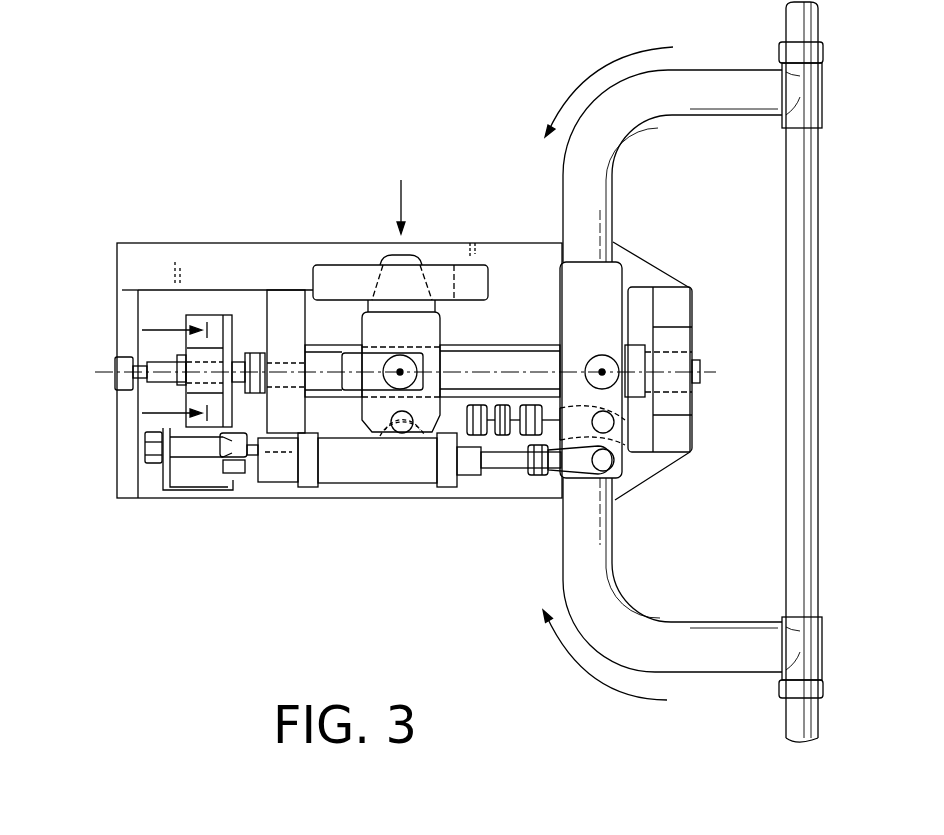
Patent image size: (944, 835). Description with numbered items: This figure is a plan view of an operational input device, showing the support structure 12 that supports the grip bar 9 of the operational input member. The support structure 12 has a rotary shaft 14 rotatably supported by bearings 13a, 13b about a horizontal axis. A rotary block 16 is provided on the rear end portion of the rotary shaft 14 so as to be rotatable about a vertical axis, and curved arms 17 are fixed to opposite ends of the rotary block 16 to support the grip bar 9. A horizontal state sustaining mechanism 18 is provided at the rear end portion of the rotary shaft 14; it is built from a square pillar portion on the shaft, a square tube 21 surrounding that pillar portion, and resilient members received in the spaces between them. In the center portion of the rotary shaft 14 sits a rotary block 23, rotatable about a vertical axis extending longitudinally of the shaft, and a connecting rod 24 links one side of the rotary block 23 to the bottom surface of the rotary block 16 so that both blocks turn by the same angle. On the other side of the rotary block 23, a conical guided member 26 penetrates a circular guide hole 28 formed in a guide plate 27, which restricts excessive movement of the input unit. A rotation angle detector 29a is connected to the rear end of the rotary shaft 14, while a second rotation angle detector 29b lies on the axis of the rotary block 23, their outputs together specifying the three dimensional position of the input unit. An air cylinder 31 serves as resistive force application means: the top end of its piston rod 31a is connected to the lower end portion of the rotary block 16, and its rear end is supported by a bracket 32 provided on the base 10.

The grip bar 9 is at (815, 357).
The base 10 is at (133, 257).
The support structure 12 is at (276, 178).
The bearing 13a is at (683, 337).
The bearing 13b is at (283, 333).
The rotary shaft 14 is at (520, 353).
The rotary block 16 is at (600, 295).
The curved arms 17 is at (732, 87).
The horizontal state sustaining mechanism 18 is at (230, 333).
The square tube 21 is at (213, 430).
The rotary block 23 is at (428, 328).
The connecting rod 24 is at (492, 440).
The guided member 26 is at (398, 258).
The guide plate 27 is at (330, 260).
The guide hole 28 is at (352, 278).
The rotation angle detector 29a is at (124, 356).
The rotation angle detector 29b is at (418, 400).
The air cylinder 31 is at (398, 473).
The piston rod 31a is at (512, 465).
The bracket 32 is at (168, 490).